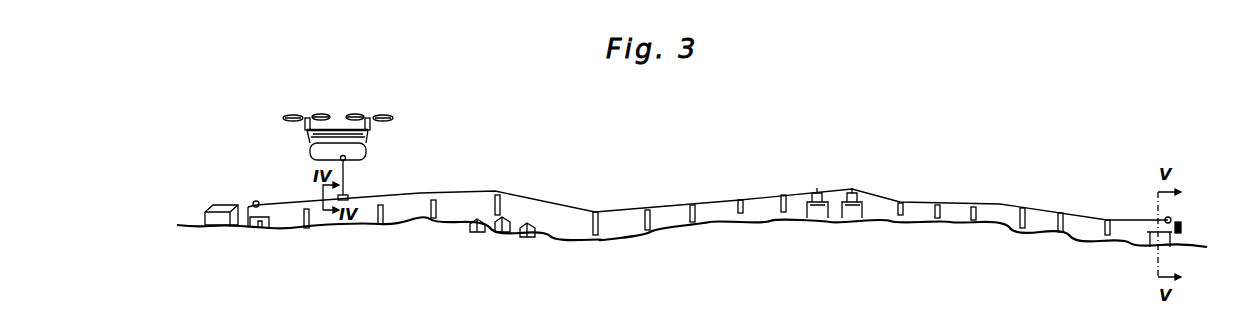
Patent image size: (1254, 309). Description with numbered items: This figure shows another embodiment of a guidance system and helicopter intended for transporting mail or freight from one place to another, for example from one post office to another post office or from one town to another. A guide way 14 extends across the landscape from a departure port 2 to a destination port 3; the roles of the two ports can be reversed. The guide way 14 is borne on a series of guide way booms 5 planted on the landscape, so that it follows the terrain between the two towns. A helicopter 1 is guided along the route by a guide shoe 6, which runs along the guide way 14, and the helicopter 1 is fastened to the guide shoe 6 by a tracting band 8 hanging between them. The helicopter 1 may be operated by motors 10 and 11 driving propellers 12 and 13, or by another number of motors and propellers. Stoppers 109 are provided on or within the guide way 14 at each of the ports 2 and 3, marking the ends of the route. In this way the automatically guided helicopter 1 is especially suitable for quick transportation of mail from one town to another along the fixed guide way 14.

The helicopter 1 is at (355, 150).
The departure port 2 is at (1158, 240).
The destination port 3 is at (260, 228).
The guide way booms 5 is at (304, 213).
The guide shoe 6 is at (350, 197).
The tracting band 8 is at (344, 172).
The motor 10 is at (303, 128).
The motor 11 is at (373, 128).
The propeller 12 is at (290, 113).
The propeller 13 is at (380, 113).
The guide way 14 is at (420, 193).
The stoppers 109 is at (254, 201).